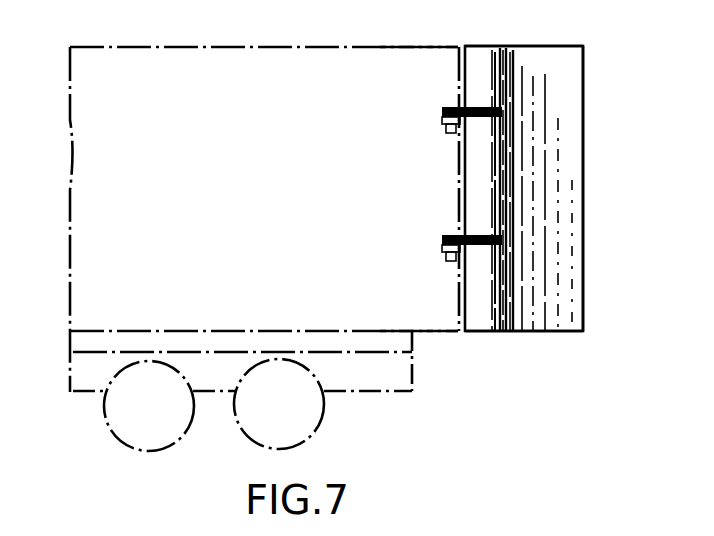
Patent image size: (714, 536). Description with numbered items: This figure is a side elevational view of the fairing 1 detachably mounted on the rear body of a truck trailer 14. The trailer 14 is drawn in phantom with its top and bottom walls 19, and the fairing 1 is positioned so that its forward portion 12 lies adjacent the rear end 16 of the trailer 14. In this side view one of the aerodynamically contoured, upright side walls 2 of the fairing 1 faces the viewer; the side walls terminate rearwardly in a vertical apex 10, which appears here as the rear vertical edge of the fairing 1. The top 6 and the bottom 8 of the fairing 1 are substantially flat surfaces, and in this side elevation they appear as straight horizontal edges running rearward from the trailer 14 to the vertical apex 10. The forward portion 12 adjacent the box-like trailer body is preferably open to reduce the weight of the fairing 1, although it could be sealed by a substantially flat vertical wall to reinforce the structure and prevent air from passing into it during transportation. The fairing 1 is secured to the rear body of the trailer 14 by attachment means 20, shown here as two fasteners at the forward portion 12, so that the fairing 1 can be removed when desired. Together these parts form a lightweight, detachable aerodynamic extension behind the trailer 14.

The fairing 1 is at (534, 198).
The side wall 2 is at (548, 220).
The top 6 is at (562, 47).
The bottom 8 is at (548, 333).
The vertical apex 10 is at (583, 180).
The forward portion 12 is at (462, 172).
The trailer 14 is at (280, 200).
The rear end 16 is at (462, 303).
The top and bottom walls 19 is at (410, 46).
The attachment means 20 is at (485, 106).